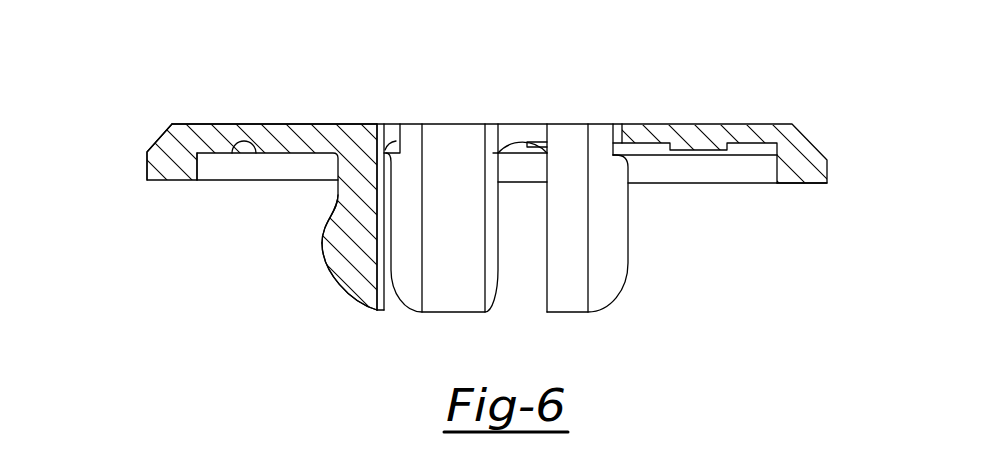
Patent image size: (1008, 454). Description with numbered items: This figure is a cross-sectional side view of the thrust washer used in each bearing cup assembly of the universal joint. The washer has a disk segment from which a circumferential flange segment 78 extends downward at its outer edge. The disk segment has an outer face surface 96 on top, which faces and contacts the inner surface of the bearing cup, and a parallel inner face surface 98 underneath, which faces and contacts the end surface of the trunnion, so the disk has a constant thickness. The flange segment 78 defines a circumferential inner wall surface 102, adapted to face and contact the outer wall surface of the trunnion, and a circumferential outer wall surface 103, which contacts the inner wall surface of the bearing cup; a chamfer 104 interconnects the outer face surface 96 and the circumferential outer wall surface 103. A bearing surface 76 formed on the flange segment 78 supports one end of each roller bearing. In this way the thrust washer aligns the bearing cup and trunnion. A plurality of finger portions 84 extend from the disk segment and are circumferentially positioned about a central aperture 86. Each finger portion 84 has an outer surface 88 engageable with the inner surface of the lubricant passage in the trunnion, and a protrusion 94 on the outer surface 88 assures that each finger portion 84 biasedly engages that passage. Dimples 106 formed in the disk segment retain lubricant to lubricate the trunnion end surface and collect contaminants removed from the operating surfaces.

The bearing surface 76 is at (794, 186).
The circumferential flange segment 78 is at (160, 152).
The finger portions 84 is at (616, 294).
The central aperture 86 is at (403, 149).
The outer surface 88 is at (348, 291).
The protrusion 94 is at (327, 242).
The outer face surface 96 is at (210, 123).
The inner face surface 98 is at (268, 154).
The circumferential inner wall surface 102 is at (198, 163).
The circumferential outer wall surface 103 is at (143, 164).
The chamfer 104 is at (797, 127).
The dimples 106 is at (752, 148).